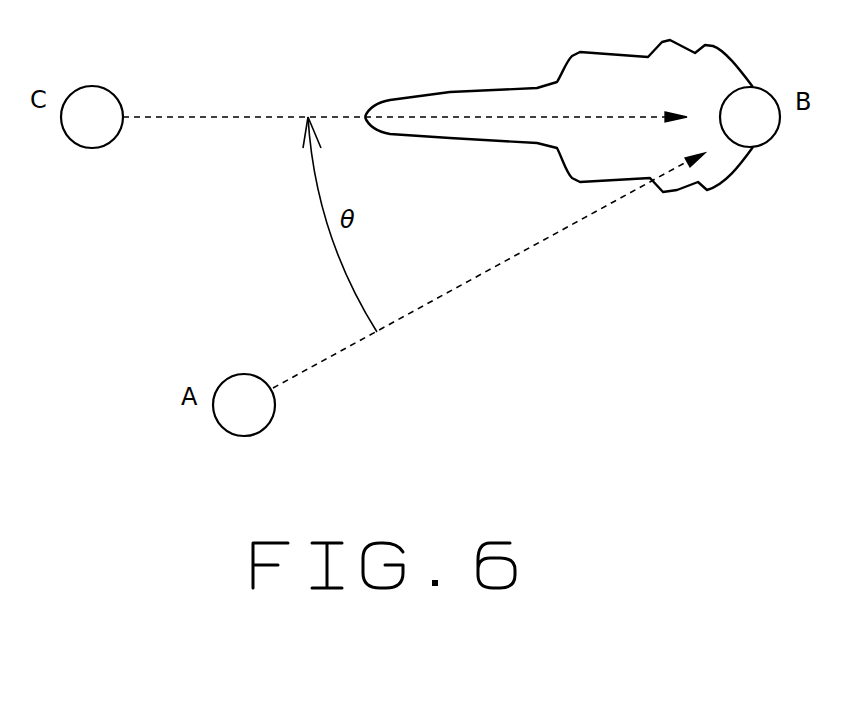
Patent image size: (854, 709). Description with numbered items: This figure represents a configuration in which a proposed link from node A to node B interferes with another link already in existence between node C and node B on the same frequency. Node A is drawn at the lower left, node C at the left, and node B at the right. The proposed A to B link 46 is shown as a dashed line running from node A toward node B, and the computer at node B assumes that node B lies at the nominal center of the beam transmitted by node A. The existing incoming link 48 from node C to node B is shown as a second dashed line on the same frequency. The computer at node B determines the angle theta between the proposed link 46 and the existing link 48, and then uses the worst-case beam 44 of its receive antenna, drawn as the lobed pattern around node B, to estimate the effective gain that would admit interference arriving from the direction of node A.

The worst-case beam 44 is at (463, 92).
The proposed A to B link 46 is at (533, 245).
The incoming links 48 is at (202, 117).